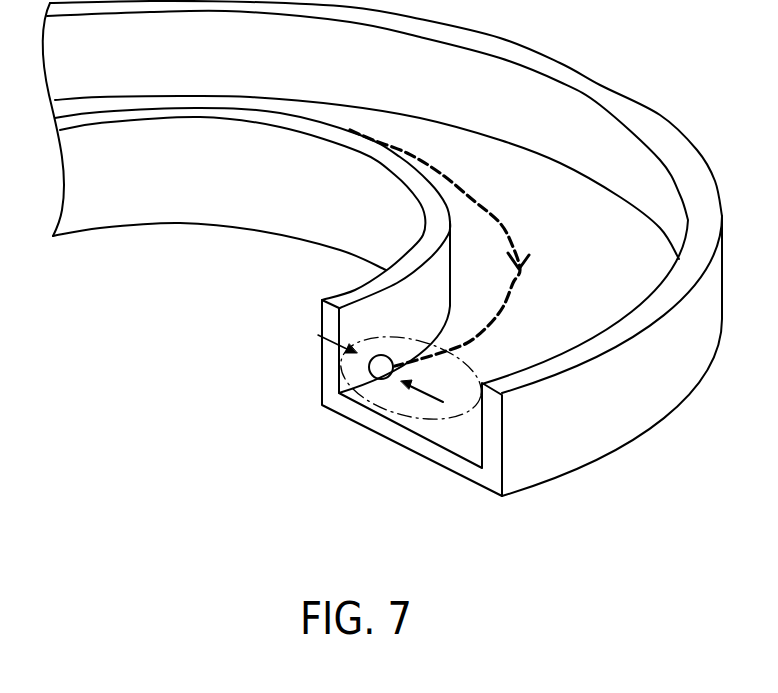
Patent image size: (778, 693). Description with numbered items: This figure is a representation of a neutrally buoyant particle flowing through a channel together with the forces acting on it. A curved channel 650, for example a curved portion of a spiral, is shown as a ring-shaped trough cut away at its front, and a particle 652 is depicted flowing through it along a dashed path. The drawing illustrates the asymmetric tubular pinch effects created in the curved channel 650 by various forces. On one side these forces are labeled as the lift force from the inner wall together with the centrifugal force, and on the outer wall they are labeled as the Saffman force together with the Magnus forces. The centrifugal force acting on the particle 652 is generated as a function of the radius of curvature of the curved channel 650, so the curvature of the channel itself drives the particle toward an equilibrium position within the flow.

The curved channel 650 is at (687, 158).
The particle 652 is at (381, 368).